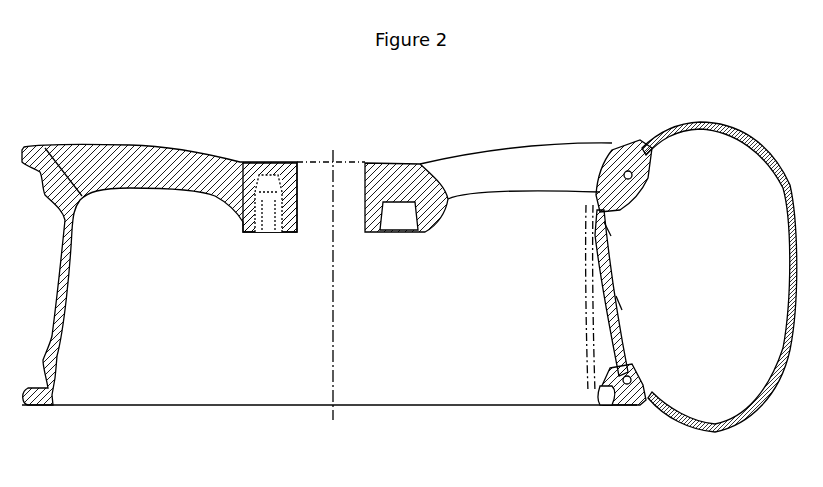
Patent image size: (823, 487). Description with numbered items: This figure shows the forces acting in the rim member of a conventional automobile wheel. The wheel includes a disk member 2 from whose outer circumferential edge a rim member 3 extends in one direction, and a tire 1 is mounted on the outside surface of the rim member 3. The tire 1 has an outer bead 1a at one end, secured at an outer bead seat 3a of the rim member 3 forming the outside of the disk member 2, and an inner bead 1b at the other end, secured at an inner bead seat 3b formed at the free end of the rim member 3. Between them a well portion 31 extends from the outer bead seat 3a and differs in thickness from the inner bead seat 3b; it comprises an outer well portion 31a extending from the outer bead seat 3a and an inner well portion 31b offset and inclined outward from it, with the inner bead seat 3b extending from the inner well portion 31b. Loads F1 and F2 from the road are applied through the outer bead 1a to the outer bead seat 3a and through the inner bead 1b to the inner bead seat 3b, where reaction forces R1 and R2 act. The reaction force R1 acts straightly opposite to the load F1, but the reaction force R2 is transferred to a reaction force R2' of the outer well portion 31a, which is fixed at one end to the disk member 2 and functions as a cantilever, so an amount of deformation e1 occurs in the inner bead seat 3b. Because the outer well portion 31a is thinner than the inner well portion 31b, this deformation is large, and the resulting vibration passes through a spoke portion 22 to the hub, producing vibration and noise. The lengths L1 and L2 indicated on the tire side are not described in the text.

The disk member 2 is at (420, 132).
The spoke portion 22 is at (537, 158).
The rim member 3 is at (578, 323).
The outer bead seat 3a is at (628, 170).
The inner bead seat 3b is at (603, 392).
The well portion 31 is at (651, 302).
The outer well portion 31a is at (606, 232).
The inner well portion 31b is at (613, 305).
The tire 1 is at (745, 128).
The outer bead 1a is at (633, 180).
The inner bead 1b is at (628, 380).
The reaction force R1 is at (583, 176).
The reaction force R2 is at (556, 386).
The reaction force R2' is at (557, 240).
The load F1 is at (685, 176).
The load F2 is at (683, 378).
The length L1 is at (606, 221).
The length L2 is at (759, 229).
The amount of deformation e1 is at (637, 448).